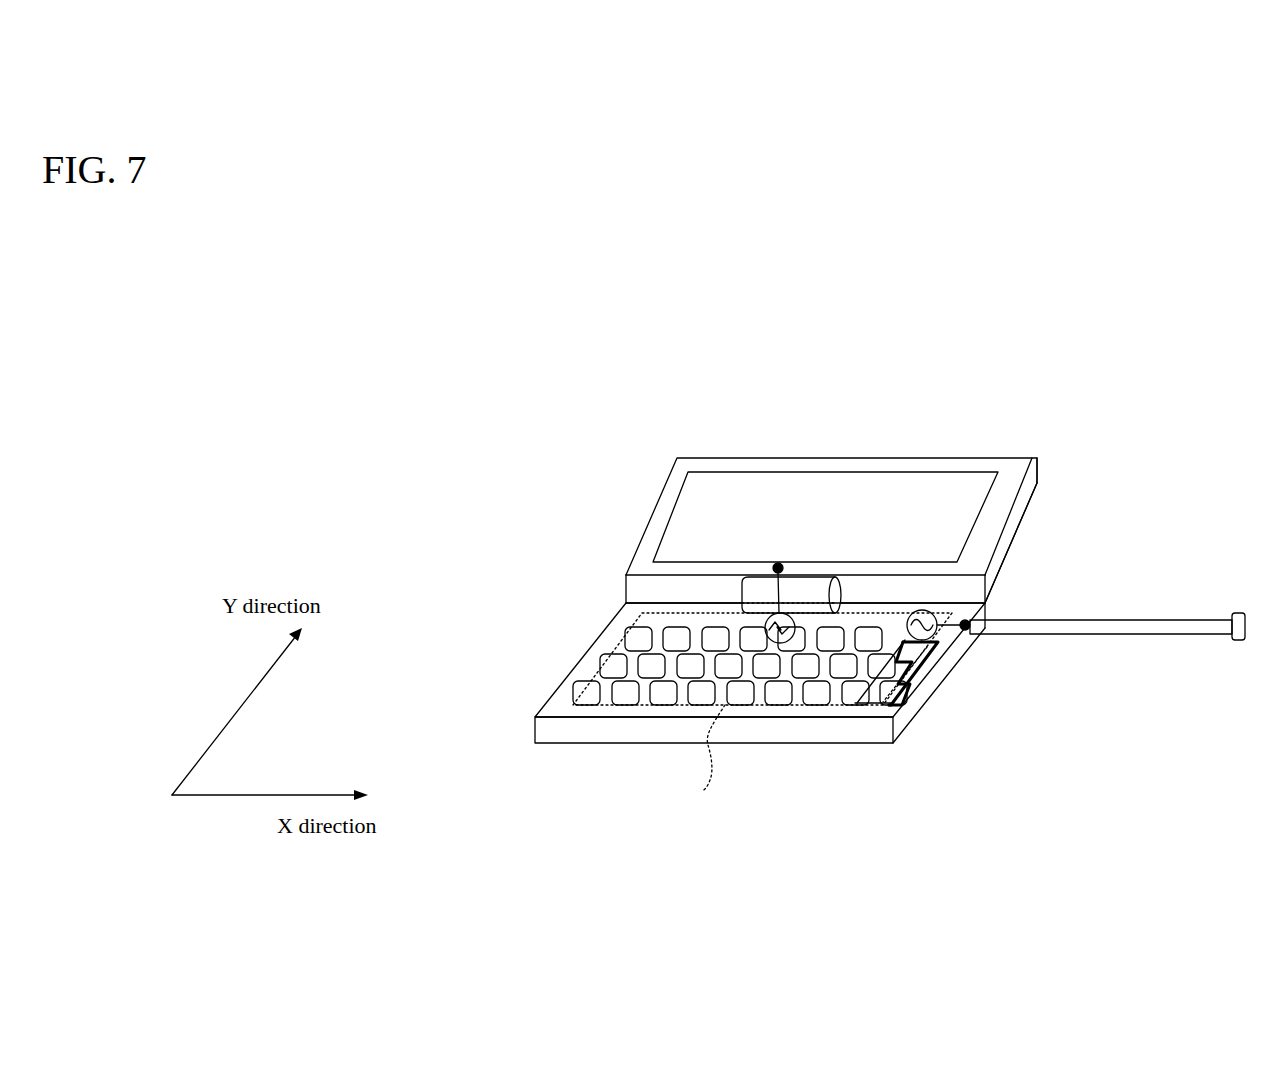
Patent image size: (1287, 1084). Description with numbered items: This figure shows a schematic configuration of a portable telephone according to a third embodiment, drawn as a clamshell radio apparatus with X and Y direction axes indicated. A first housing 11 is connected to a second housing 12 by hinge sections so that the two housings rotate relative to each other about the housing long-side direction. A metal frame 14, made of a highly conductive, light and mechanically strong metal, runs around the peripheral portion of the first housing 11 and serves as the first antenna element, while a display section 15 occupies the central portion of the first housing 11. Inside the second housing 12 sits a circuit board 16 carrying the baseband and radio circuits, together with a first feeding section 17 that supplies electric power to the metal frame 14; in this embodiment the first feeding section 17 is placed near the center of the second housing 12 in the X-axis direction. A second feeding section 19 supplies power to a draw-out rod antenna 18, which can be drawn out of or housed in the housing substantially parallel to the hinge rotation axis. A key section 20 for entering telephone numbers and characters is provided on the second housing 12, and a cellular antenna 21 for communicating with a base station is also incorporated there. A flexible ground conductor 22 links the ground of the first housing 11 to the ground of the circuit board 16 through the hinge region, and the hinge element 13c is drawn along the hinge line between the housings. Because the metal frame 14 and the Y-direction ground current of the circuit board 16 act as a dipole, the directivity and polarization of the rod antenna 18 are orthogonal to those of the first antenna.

The first housing 11 is at (975, 458).
The second housing 12 is at (550, 728).
The antenna element 13c is at (766, 583).
The metal frame 14 is at (1007, 483).
The display section 15 is at (795, 482).
The circuit board 16 is at (762, 719).
The first feeding section 17 is at (780, 643).
The draw-out rod antenna 18 is at (1140, 623).
The second feeding section 19 is at (965, 630).
The key section 20 is at (613, 668).
The cellular antenna 21 is at (877, 710).
The flexible ground conductor 22 is at (665, 588).